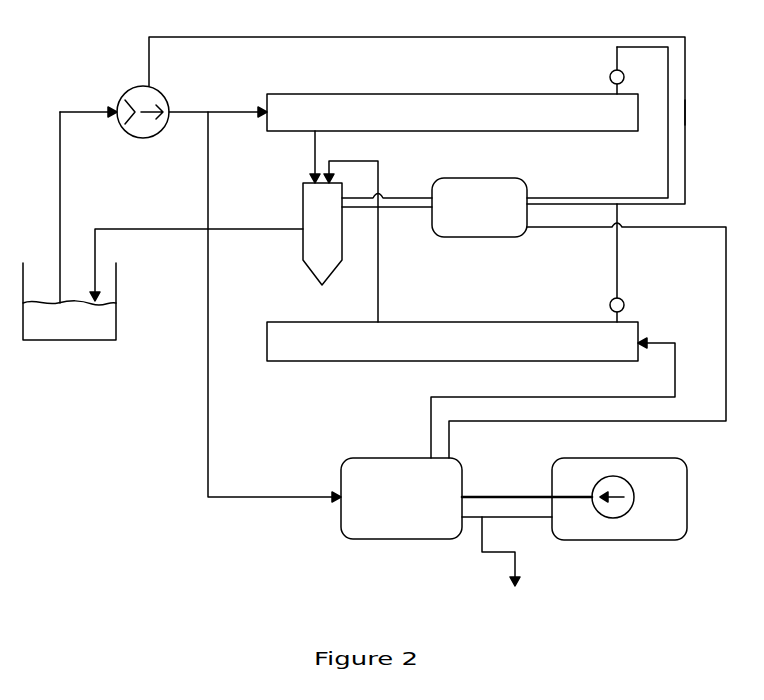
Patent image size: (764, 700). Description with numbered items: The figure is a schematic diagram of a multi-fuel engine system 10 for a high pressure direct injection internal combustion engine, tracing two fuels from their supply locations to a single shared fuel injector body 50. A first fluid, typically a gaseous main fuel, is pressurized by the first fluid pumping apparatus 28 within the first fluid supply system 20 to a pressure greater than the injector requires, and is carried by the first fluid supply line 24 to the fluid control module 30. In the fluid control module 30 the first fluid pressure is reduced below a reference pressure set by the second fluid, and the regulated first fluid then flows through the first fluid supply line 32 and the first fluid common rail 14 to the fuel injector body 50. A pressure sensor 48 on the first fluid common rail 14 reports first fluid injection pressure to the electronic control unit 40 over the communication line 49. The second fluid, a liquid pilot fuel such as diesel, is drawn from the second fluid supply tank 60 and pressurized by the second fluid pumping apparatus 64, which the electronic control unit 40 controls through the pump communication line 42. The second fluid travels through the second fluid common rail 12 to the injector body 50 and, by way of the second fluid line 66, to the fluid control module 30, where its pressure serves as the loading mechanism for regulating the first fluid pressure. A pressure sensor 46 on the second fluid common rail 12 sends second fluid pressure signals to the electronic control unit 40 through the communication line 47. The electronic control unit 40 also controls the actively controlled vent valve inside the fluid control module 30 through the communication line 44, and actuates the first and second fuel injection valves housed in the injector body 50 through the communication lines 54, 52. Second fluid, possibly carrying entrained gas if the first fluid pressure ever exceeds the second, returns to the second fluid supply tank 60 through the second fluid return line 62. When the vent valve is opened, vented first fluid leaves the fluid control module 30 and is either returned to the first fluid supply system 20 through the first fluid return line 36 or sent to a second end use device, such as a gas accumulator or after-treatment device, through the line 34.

The multi-fuel engine system 10 is at (87, 52).
The second fluid common rail 12 is at (454, 94).
The first fluid common rail 14 is at (452, 322).
The first fluid supply system 20 is at (578, 458).
The first fluid supply line 24 is at (500, 497).
The first fluid pumping apparatus 28 is at (637, 484).
The fluid control module 30 is at (372, 458).
The first fluid supply line 32 is at (676, 386).
The line to second end use device 34 is at (497, 552).
The first fluid return line 36 is at (533, 519).
The electronic control unit 40 is at (486, 178).
The pump communication line 42 is at (688, 121).
The communication line 44 is at (711, 210).
The pressure sensor 46 is at (611, 74).
The communication line 47 is at (667, 140).
The pressure sensor 48 is at (625, 305).
The communication line 49 is at (620, 271).
The fuel injector body 50 is at (303, 212).
The communication line 52 is at (392, 197).
The communication line 54 is at (410, 209).
The second fluid supply tank 60 is at (118, 283).
The second fluid return line 62 is at (140, 229).
The second fluid pumping apparatus 64 is at (162, 90).
The second fluid line 66 is at (207, 386).